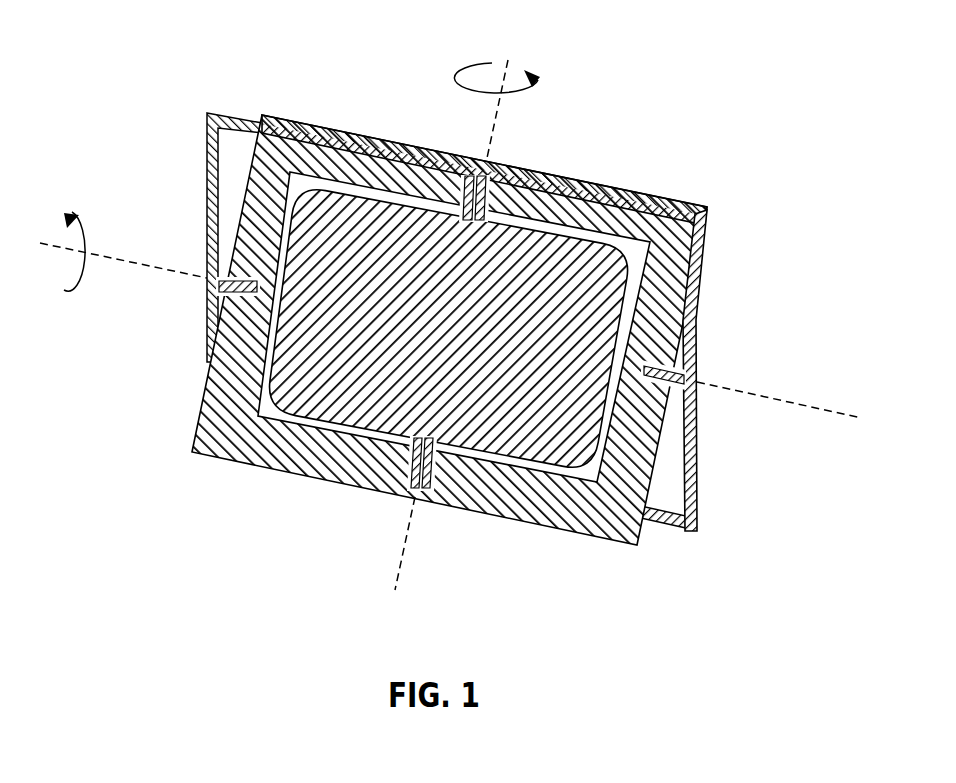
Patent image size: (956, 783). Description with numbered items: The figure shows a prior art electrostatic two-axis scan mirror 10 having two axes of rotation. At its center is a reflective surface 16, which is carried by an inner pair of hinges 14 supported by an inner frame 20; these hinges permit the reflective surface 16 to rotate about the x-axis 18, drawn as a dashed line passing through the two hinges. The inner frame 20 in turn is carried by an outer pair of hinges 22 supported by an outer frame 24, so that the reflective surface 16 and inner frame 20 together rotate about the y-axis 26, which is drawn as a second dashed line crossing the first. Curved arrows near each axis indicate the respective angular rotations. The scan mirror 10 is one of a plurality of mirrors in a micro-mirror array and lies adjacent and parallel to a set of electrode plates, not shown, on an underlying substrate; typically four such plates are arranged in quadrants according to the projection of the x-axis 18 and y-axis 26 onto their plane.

The scan mirror 10 is at (459, 305).
The inner pair of hinges 14 is at (490, 182).
The reflective surface 16 is at (593, 258).
The x-axis 18 is at (466, 150).
The inner frame 20 is at (203, 412).
The outer pair of hinges 22 is at (240, 281).
The outer frame 24 is at (695, 472).
The y-axis 26 is at (116, 257).